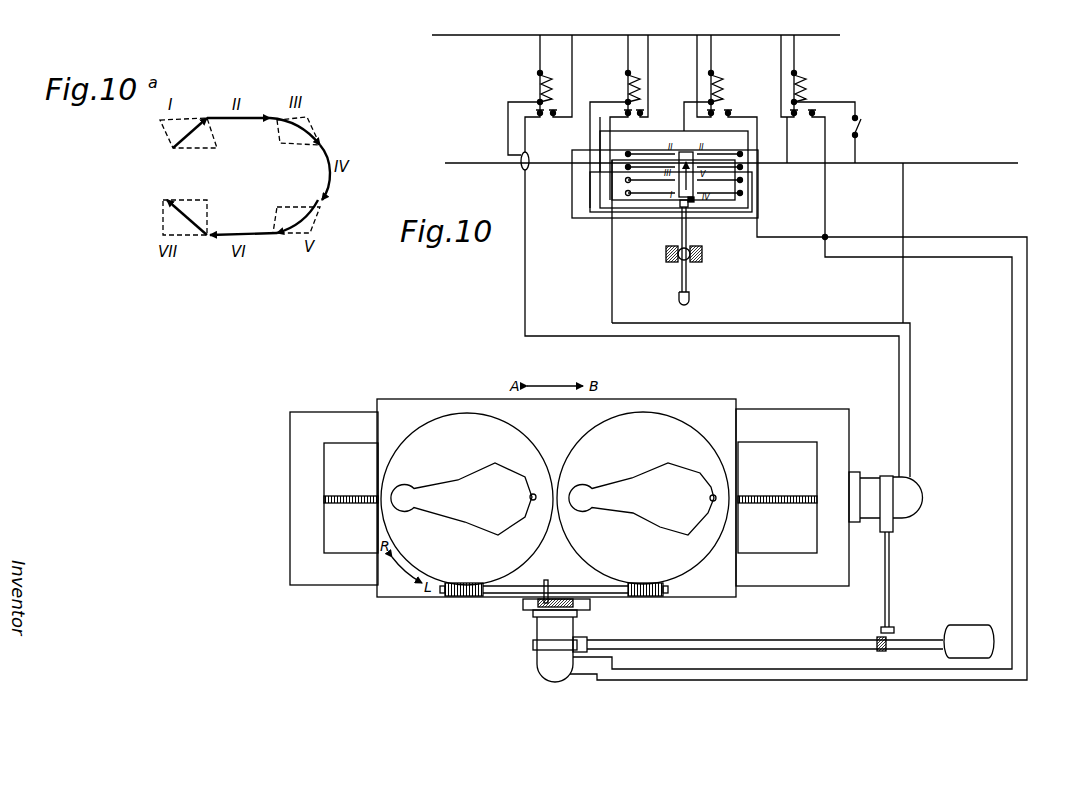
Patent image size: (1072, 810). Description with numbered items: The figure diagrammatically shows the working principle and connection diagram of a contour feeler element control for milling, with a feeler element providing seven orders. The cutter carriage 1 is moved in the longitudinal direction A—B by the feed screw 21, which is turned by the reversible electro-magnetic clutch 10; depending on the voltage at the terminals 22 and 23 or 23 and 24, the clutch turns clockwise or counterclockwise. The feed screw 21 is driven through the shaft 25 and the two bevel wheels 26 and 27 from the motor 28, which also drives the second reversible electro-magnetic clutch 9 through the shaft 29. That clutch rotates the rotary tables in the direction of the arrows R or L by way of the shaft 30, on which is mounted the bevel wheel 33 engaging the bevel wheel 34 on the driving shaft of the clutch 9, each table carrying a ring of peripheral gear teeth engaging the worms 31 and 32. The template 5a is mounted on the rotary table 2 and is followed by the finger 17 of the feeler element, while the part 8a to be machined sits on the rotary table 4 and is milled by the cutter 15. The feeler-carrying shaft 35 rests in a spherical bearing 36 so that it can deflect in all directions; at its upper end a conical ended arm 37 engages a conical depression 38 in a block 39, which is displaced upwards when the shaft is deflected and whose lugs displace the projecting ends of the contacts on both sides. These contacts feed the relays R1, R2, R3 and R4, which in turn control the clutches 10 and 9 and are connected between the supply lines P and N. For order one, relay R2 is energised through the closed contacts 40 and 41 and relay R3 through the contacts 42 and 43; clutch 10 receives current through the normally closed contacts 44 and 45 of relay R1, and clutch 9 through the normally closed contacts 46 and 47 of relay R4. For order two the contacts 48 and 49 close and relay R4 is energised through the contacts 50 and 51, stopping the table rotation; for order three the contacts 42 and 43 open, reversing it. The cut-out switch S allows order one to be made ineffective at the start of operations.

The cutter carriage 1 is at (622, 406).
The rotary table 2 is at (668, 425).
The rotary table 4 is at (450, 422).
The template 5a is at (666, 520).
The part to be machined 8a is at (474, 480).
The second reversible electro-magnetic clutch 9 is at (545, 631).
The reversible electro-magnetic clutch 10 is at (918, 508).
The cutter 15 is at (537, 494).
The finger of the feeler element 17 is at (718, 495).
The feed screw 21 is at (781, 504).
The terminal 22 is at (893, 477).
The terminal 23 is at (910, 476).
The terminal 24 is at (915, 479).
The shaft 25 is at (890, 593).
The bevel wheel 26 is at (894, 632).
The bevel wheel 27 is at (877, 639).
The motor 28 is at (973, 633).
The shaft 29 is at (748, 641).
The shaft 30 is at (505, 595).
The worm 31 is at (462, 598).
The worm 32 is at (650, 598).
The bevel wheel 33 is at (547, 580).
The bevel wheel 34 is at (578, 617).
The feeler-carrying shaft 35 is at (689, 280).
The spherical bearing 36 is at (668, 258).
The conical ended arm 37 is at (678, 208).
The conical depression 38 is at (693, 207).
The block 39 is at (686, 152).
The contact 40 is at (708, 167).
The contact 41 is at (733, 164).
The contact 42 is at (630, 165).
The contact 43 is at (646, 165).
The normally closed contact 44 is at (535, 131).
The normally closed contact 45 is at (560, 84).
The normally closed contact 46 is at (792, 99).
The normally closed contact 47 is at (792, 389).
The contact 48 is at (632, 205).
The contact 49 is at (650, 208).
The contact 50 is at (722, 208).
The contact 51 is at (736, 205).
The relay R1 is at (534, 74).
The relay R2 is at (621, 74).
The relay R3 is at (728, 74).
The relay R4 is at (811, 74).
The cut-out switch S is at (832, 132).
The positive line P is at (636, 46).
The negative line N is at (731, 153).